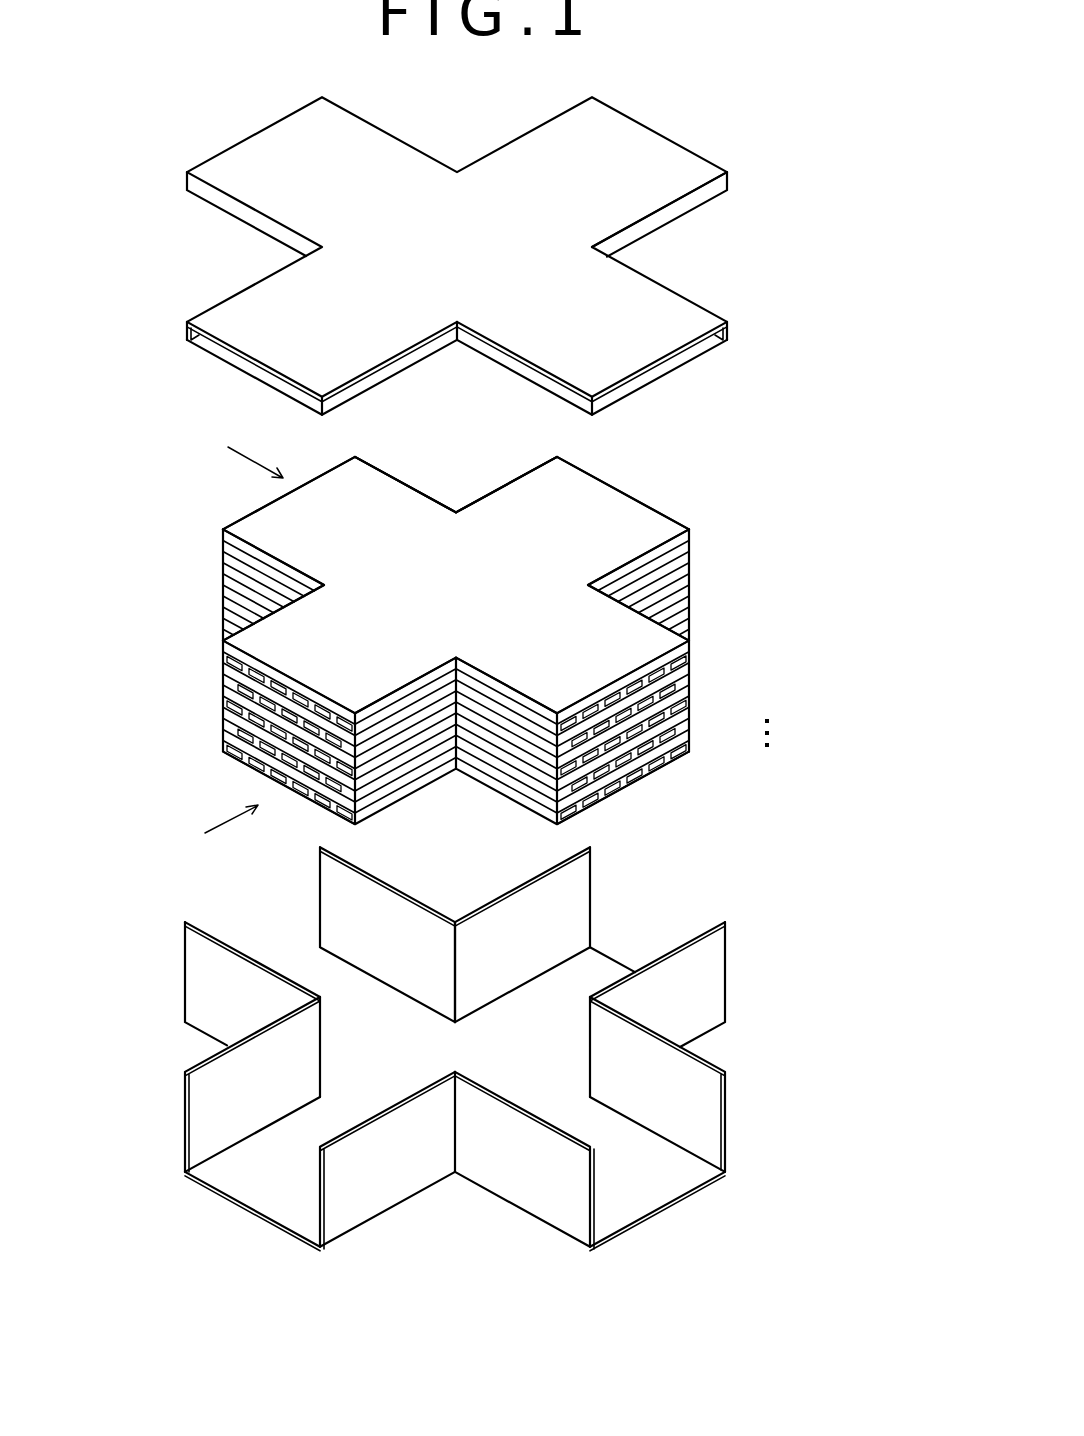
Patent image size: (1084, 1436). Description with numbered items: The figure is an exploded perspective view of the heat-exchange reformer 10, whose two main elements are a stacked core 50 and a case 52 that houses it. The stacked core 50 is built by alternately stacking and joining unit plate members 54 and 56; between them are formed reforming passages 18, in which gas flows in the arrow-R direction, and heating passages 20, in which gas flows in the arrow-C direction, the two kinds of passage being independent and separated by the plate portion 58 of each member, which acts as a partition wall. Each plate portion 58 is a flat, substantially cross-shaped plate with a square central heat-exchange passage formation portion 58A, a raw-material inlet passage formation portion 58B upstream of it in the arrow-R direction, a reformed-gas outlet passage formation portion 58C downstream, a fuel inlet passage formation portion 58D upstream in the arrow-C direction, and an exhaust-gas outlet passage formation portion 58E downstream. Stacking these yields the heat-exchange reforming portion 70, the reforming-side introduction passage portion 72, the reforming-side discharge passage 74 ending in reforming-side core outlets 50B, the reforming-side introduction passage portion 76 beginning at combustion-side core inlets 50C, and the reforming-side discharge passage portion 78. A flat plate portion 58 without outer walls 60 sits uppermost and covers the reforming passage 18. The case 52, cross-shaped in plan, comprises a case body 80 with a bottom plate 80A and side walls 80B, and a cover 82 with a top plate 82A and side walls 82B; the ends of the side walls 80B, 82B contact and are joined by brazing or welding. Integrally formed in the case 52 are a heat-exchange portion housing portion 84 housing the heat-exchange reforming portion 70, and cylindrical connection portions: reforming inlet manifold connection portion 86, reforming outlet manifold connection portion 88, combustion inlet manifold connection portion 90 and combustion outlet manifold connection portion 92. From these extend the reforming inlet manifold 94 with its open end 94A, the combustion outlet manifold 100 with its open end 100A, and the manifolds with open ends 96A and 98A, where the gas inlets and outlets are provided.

The heat-exchange reformer 10 is at (781, 152).
The cover 82 is at (672, 122).
The case 52 is at (491, 245).
The top plate 82A is at (548, 283).
The side walls 82B is at (698, 202).
The stacked core 50 is at (683, 487).
The plate portion 58 is at (410, 524).
The reforming-side introduction passage portion 72 is at (339, 474).
The raw-material inlet passage formation portion 58B is at (344, 502).
The heat-exchange reforming portion 70 is at (466, 565).
The heat-exchange passage formation portion 58A is at (479, 582).
The reforming-side discharge passage portion 78 is at (595, 475).
The exhaust-gas outlet passage formation portion 58E is at (606, 503).
The reforming-side discharge passage 74 is at (712, 588).
The reformed-gas outlet passage formation portion 58C is at (640, 640).
The reforming-side introduction passage portion 76 is at (204, 589).
The fuel inlet passage formation portion 58D is at (285, 640).
The outer walls 60 is at (223, 600).
The unit plate member 54 is at (698, 644).
The unit plate member 56 is at (698, 664).
The combustion-side core inlet 50C is at (248, 736).
The heating passage 20 is at (195, 801).
The reforming-side core outlet 50B is at (686, 733).
The reforming passage 18 is at (648, 744).
The case body 80 is at (757, 934).
The bottom plate 80A is at (617, 1185).
The side walls 80B is at (567, 987).
The heat-exchange portion housing portion 84 is at (477, 1053).
The reforming inlet manifold connection portion 86 is at (337, 973).
The reforming outlet manifold connection portion 88 is at (530, 1102).
The combustion inlet manifold connection portion 90 is at (333, 1113).
The combustion outlet manifold connection portion 92 is at (576, 924).
The reforming inlet manifold 94 is at (293, 970).
The open end 94A is at (314, 966).
The open end 96A is at (693, 1168).
The open end 98A is at (252, 1200).
The combustion outlet manifold 100 is at (701, 996).
The open end 100A is at (610, 965).